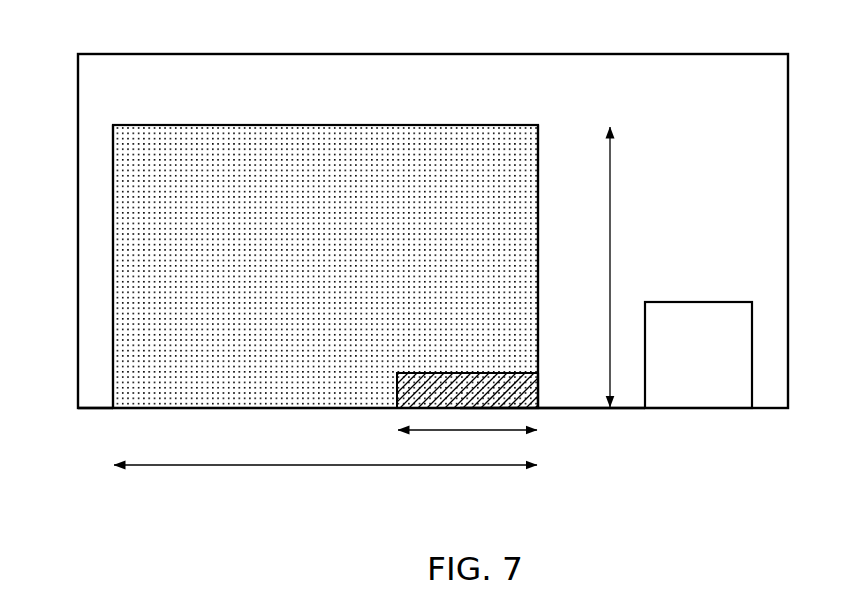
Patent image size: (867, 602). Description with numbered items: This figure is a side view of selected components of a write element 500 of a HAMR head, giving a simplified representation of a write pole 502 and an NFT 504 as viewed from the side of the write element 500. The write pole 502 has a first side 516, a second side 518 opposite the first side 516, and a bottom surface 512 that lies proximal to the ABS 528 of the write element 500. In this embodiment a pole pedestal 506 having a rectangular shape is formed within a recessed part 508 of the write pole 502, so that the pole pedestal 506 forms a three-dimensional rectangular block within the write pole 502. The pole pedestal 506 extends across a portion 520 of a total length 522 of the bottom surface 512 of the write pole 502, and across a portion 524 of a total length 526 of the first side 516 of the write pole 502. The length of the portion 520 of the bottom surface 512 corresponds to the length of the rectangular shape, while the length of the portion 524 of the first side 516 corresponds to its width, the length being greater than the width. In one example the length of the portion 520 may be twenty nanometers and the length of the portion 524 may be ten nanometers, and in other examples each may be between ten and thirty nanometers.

The write element 500 is at (451, 53).
The write pole 502 is at (293, 124).
The NFT 504 is at (681, 301).
The pole pedestal 506 is at (432, 372).
The recessed part 508 is at (531, 412).
The bottom surface 512 is at (263, 396).
The first side 516 is at (545, 156).
The second side 518 is at (118, 300).
The portion of the bottom surface 520 is at (467, 445).
The total length of the bottom surface 522 is at (325, 480).
The portion of the first side 524 is at (543, 391).
The total length of the first side 526 is at (630, 267).
The ABS 528 is at (98, 410).